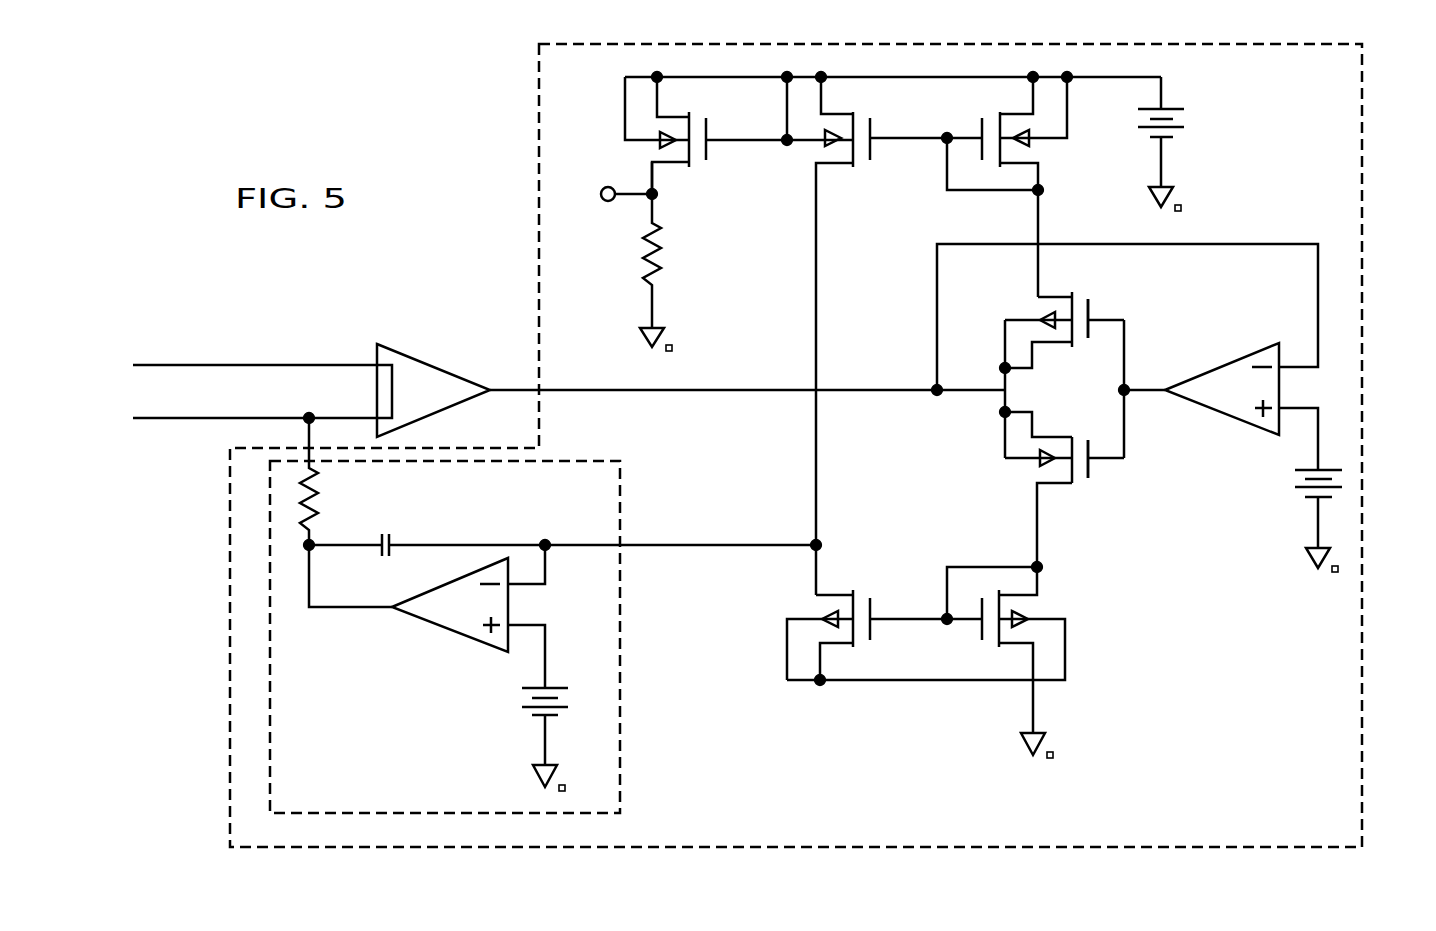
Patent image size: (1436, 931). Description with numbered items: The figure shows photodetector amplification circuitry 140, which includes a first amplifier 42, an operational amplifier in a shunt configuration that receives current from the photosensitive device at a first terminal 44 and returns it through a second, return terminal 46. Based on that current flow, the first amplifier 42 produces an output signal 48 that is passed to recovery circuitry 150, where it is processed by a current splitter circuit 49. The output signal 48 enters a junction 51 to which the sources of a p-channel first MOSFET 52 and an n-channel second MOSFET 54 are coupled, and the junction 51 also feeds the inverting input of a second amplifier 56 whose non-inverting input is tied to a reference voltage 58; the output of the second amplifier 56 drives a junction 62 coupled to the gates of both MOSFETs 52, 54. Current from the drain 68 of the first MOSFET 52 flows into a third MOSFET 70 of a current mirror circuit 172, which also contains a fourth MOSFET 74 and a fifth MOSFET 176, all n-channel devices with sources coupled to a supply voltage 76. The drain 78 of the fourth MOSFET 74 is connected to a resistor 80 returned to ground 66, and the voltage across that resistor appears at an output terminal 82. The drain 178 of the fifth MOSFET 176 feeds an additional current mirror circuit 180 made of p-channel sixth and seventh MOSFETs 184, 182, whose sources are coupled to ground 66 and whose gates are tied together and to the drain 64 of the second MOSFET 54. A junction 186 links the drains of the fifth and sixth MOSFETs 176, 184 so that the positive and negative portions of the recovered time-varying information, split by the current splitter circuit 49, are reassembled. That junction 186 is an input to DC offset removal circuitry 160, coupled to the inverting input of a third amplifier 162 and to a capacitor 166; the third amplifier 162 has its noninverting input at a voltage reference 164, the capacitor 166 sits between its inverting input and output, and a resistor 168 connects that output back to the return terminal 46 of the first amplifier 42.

The circuitry 140 is at (255, 356).
The first terminal 44 is at (368, 352).
The second, return terminal 46 is at (368, 410).
The first amplifier 42 is at (440, 412).
The output signal 48 is at (497, 380).
The recovery circuitry 150 is at (525, 197).
The DC offset removal circuitry 160 is at (623, 500).
The third amplifier 162 is at (483, 648).
The voltage reference 164 is at (555, 615).
The capacitor 166 is at (383, 565).
The resistor 168 is at (338, 502).
The ground 66 is at (1143, 207).
The current mirror circuit 172 is at (612, 70).
The fourth MOSFET 74 is at (720, 152).
The drain 78 is at (640, 160).
The drain 178 is at (800, 150).
The fifth MOSFET 176 is at (885, 148).
The third MOSFET 70 is at (1083, 90).
The supply voltage 76 is at (1178, 73).
The resistor 80 is at (678, 255).
The output terminal 82 is at (612, 212).
The junction 51 is at (933, 405).
The current splitter circuit 49 is at (970, 452).
The first MOSFET 52 is at (1105, 300).
The drain 68 is at (1025, 302).
The second MOSFET 54 is at (1105, 478).
The drain 64 is at (1025, 475).
The junction 62 is at (1138, 375).
The second amplifier 56 is at (1218, 415).
The reference voltage 58 is at (1330, 395).
The junction 186 is at (803, 530).
The sixth MOSFET 184 is at (872, 570).
The additional current mirror circuit 180 is at (1075, 570).
The seventh MOSFET 182 is at (1095, 620).